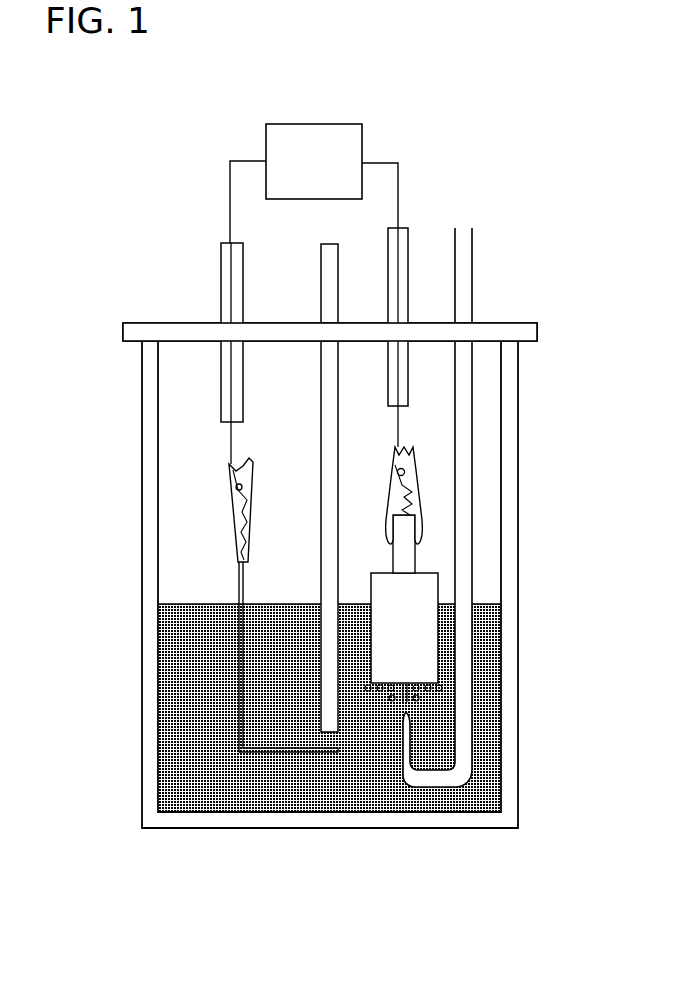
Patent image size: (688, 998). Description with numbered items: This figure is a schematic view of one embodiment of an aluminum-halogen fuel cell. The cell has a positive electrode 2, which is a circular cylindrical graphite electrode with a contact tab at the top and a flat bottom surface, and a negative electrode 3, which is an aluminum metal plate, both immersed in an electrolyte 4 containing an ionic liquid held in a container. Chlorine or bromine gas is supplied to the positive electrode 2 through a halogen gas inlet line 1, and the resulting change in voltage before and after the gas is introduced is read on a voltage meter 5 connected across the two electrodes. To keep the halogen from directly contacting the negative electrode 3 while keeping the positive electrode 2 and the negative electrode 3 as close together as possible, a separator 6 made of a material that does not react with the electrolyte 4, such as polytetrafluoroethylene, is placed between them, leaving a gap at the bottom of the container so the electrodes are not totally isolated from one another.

The halogen gas inlet line 1 is at (472, 270).
The positive electrode 2 is at (438, 582).
The negative electrode 3 is at (237, 650).
The electrolyte 4 is at (483, 648).
The voltage meter 5 is at (323, 124).
The separator 6 is at (338, 442).